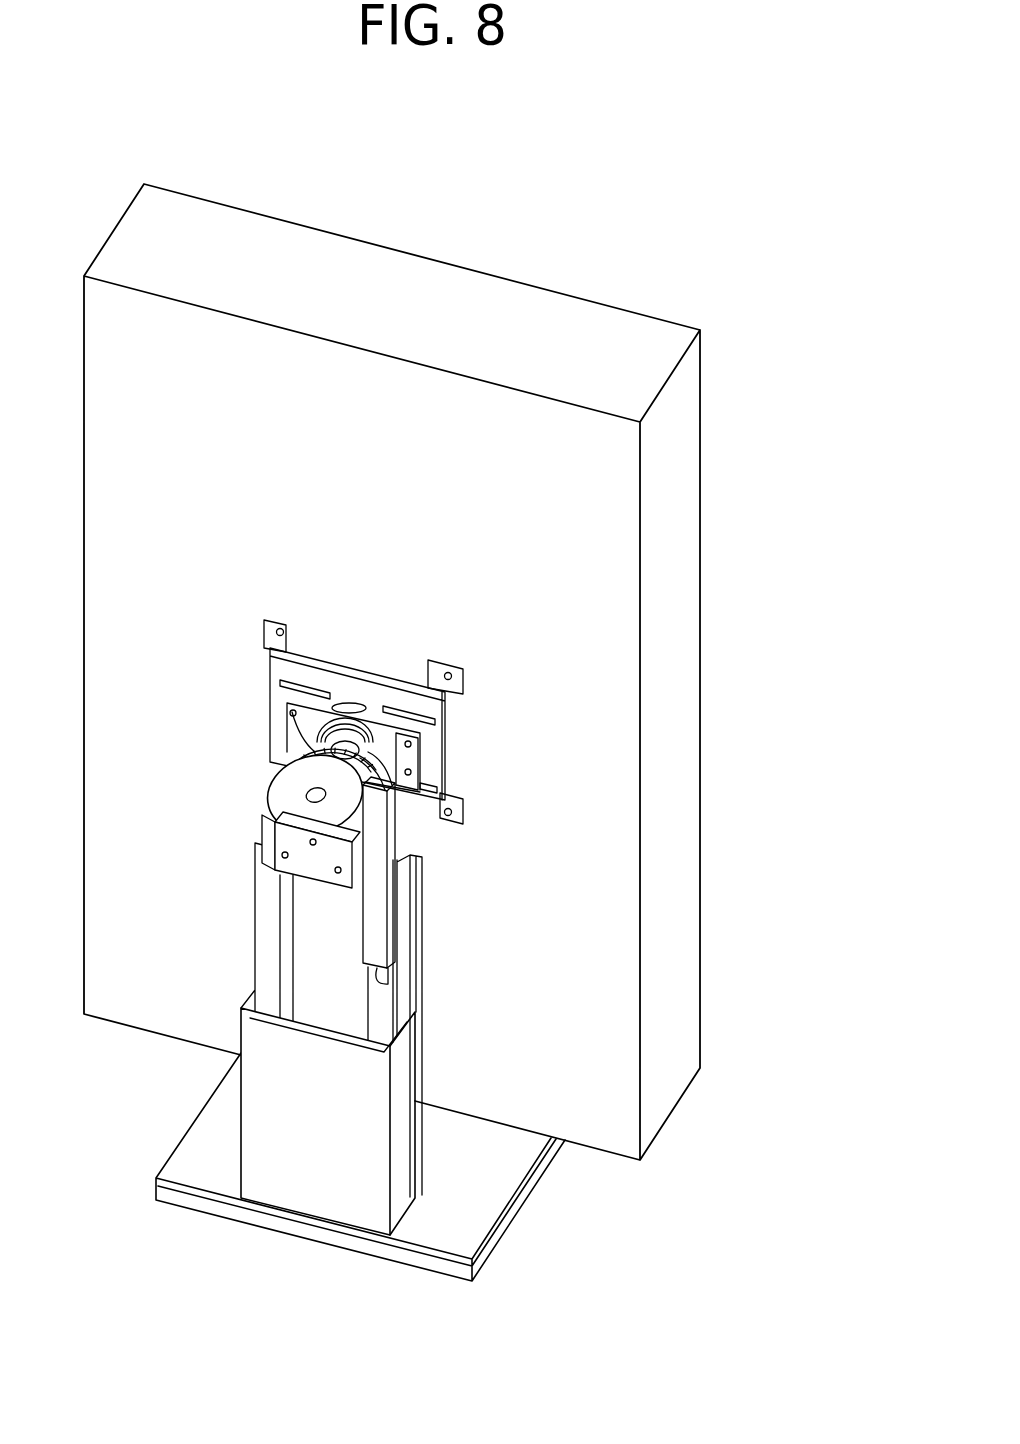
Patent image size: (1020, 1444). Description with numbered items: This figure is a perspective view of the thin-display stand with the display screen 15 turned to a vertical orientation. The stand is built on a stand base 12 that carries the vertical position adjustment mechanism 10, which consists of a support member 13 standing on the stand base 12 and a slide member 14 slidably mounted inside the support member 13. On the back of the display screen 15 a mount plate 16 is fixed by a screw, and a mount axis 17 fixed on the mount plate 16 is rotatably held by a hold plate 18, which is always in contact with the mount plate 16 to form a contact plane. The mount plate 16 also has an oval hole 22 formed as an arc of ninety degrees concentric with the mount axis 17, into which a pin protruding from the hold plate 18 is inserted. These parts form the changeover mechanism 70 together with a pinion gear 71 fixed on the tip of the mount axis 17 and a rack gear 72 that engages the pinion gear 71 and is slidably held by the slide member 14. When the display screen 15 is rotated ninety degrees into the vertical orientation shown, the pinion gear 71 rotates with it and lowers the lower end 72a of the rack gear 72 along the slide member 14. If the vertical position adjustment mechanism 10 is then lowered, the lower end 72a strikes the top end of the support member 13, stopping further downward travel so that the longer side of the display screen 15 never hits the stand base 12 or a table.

The vertical position adjustment mechanism 10 is at (376, 940).
The stand base 12 is at (482, 1187).
The support member 13 is at (308, 1175).
The slide member 14 is at (268, 947).
The display screen 15 is at (388, 307).
The mount plate 16 is at (433, 738).
The mount axis 17 is at (421, 762).
The hold plate 18 is at (373, 722).
The oval hole 22 is at (347, 705).
The changeover mechanism 70 is at (330, 691).
The pinion gear 71 is at (283, 792).
The rack gear 72 is at (467, 880).
The lower end of the rack gear 72a is at (380, 984).